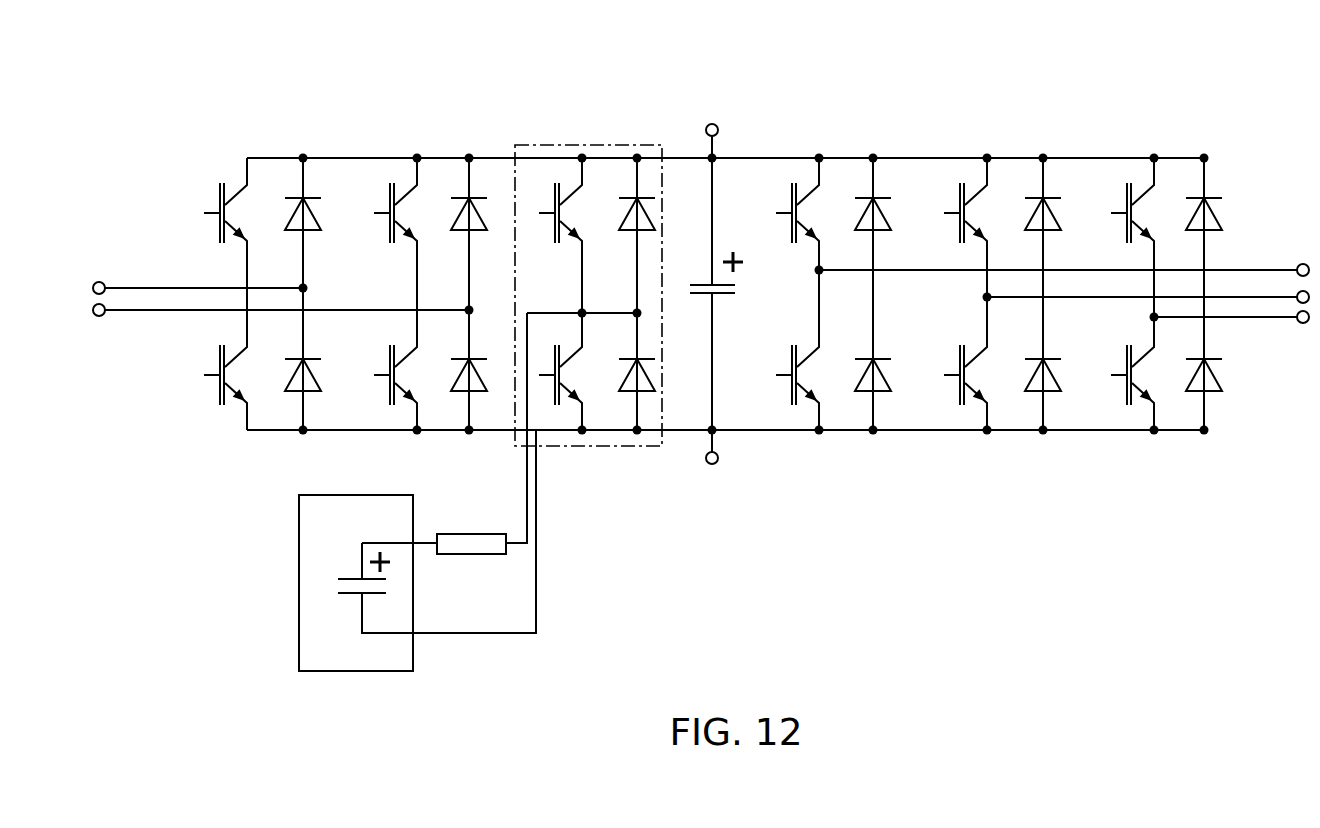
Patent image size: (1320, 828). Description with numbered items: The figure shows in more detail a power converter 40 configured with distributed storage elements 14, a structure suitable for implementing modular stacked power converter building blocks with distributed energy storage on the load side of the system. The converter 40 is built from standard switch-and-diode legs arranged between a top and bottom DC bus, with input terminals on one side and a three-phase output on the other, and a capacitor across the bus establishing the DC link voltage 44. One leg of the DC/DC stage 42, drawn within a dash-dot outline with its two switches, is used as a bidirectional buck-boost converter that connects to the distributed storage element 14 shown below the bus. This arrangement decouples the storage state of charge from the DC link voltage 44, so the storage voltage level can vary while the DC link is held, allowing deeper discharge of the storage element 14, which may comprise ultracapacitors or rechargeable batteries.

The power converter 40 is at (633, 54).
The DC/DC stage 42 is at (486, 135).
The DC link voltage 44 is at (737, 231).
The distributed storage offshore element 14 is at (288, 545).